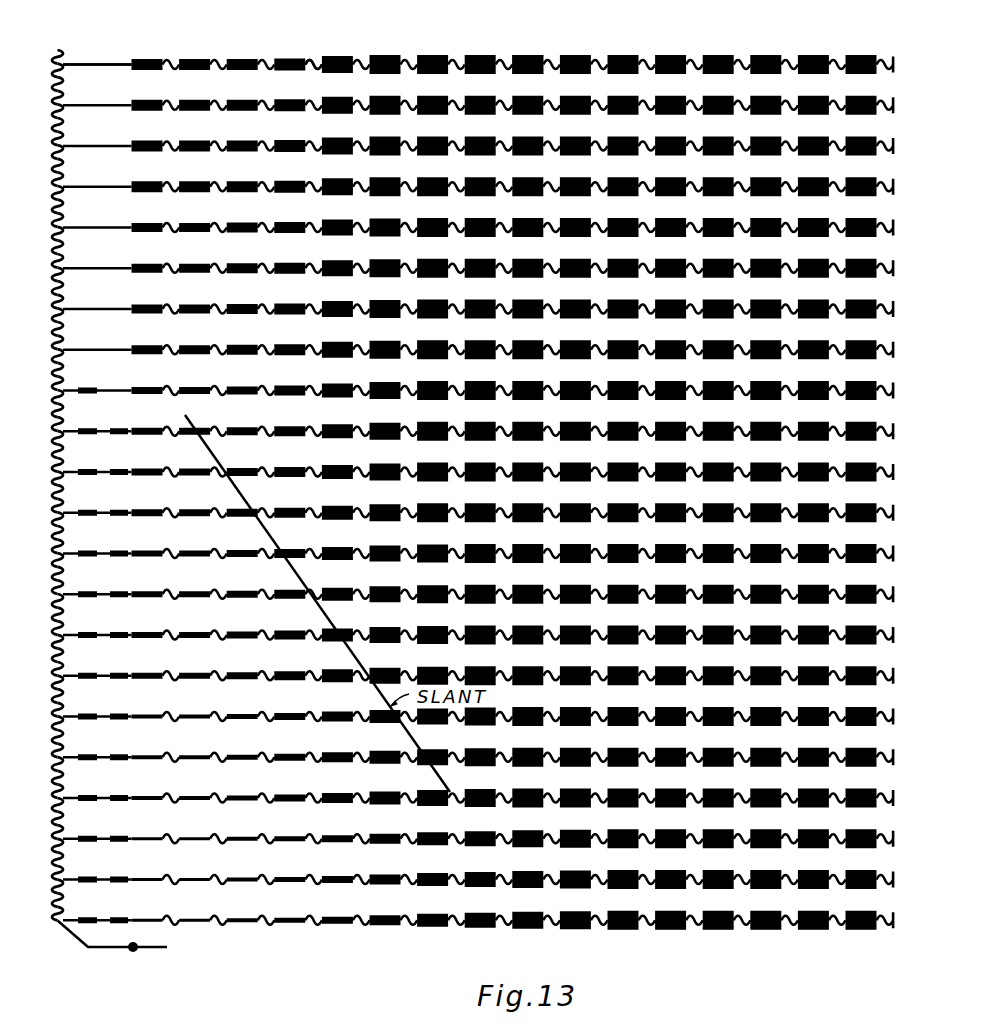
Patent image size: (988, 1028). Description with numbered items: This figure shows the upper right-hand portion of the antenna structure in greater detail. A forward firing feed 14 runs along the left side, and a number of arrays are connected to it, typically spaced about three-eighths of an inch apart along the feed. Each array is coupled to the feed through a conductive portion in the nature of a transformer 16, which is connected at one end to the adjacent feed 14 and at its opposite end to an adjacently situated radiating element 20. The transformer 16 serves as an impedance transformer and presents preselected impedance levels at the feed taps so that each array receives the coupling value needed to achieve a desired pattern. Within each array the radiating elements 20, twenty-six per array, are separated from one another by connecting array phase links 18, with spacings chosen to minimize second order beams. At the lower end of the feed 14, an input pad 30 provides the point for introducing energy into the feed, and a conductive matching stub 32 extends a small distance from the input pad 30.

The forward firing feed 14 is at (56, 541).
The transformer 16 is at (58, 61).
The connecting array phase link 18 is at (317, 61).
The radiating element 20 is at (520, 55).
The input pad 30 is at (142, 960).
The conductive matching stub 32 is at (182, 953).